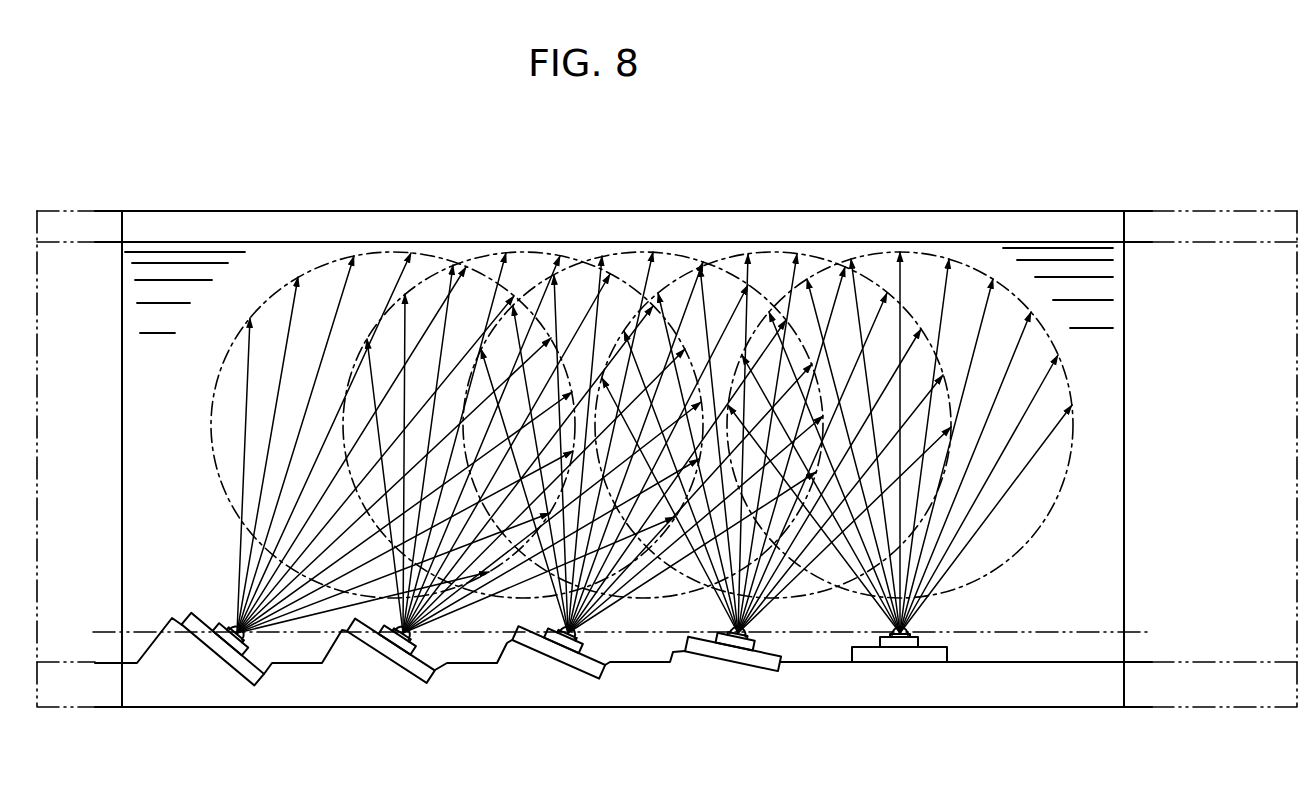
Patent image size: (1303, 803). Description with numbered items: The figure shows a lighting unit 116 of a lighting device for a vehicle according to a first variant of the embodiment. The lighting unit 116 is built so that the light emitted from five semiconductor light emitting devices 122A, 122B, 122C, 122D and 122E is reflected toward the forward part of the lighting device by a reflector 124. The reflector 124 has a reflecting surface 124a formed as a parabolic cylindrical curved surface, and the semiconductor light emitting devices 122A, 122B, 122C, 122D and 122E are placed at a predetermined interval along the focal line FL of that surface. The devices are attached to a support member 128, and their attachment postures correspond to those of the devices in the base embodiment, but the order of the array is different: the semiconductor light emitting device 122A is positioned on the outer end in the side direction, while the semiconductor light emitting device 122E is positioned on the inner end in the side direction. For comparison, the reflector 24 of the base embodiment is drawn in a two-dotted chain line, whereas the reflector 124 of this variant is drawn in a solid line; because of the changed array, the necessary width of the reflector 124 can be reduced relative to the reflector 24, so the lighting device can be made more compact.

The lighting unit 116 is at (940, 126).
The reflector 124 is at (718, 206).
The reflecting surface 124a is at (142, 320).
The reflector 24 is at (1188, 208).
The semiconductor light emitting device 122A is at (922, 624).
The semiconductor light emitting device 122B is at (770, 642).
The semiconductor light emitting device 122C is at (600, 645).
The semiconductor light emitting device 122D is at (430, 644).
The semiconductor light emitting device 122E is at (262, 646).
The support member 128 is at (1008, 693).
The focal line FL is at (1062, 632).